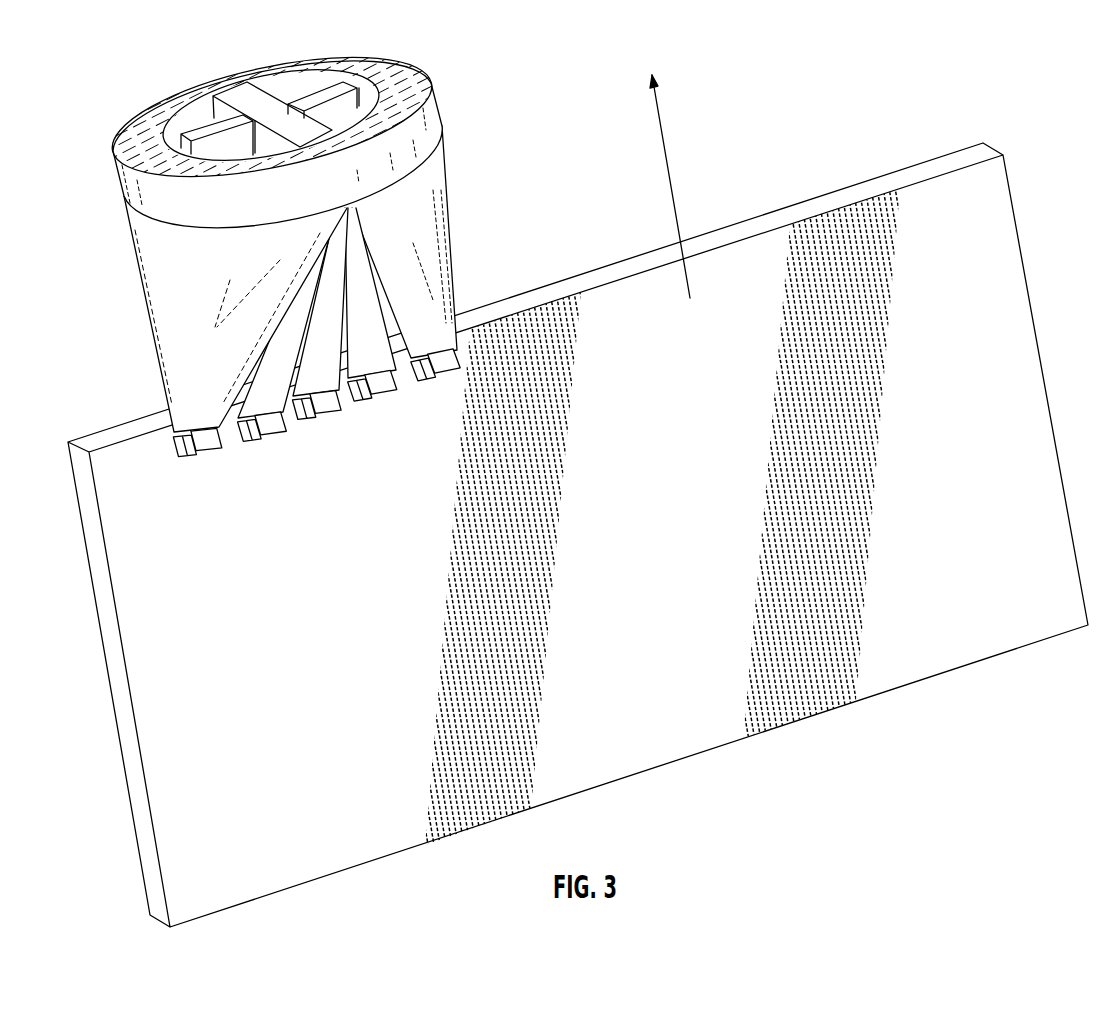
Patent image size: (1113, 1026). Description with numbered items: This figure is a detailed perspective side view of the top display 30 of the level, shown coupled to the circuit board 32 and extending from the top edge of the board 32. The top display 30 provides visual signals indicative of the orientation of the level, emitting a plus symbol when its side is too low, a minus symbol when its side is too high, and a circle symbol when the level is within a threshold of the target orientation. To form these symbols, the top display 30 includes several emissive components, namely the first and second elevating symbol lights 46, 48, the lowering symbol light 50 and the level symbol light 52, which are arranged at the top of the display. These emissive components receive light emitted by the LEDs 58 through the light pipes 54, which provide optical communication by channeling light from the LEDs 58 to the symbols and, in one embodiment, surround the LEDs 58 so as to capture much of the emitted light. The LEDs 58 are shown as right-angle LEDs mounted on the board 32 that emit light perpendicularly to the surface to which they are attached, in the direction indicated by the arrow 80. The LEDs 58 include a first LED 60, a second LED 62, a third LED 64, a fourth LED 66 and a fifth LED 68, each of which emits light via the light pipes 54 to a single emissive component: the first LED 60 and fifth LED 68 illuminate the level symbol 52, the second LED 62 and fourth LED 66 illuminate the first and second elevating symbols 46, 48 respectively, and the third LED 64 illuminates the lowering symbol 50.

The top display 30 is at (277, 251).
The circuit board 32 is at (983, 143).
The first elevating symbol light 46 is at (210, 133).
The second elevating symbol light 48 is at (322, 97).
The lowering symbol light 50 is at (255, 105).
The level symbol light 52 is at (383, 75).
The light pipes 54 is at (306, 314).
The LEDs 58 is at (190, 456).
The first LED 60 is at (207, 458).
The second LED 62 is at (270, 436).
The third LED 64 is at (330, 418).
The fourth LED 66 is at (383, 400).
The fifth LED 68 is at (436, 380).
The direction arrow 80 is at (669, 170).